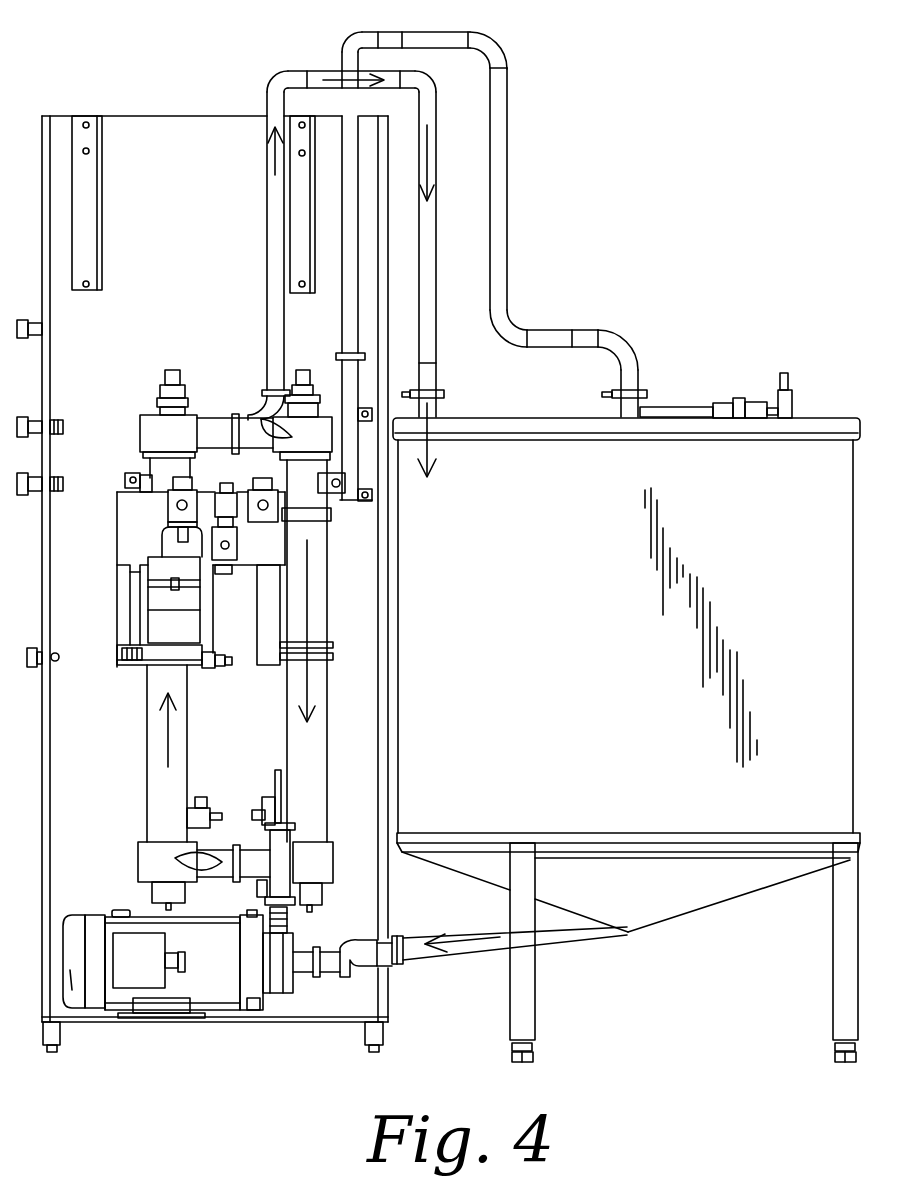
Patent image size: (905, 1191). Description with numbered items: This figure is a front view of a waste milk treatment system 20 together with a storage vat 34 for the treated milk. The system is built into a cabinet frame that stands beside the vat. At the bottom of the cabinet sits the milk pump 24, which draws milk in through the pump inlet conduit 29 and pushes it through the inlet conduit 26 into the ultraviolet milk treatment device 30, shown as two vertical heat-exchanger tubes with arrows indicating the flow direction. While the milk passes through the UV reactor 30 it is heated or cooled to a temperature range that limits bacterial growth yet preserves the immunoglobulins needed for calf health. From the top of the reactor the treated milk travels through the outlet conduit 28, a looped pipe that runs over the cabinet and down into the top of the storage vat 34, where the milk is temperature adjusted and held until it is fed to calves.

The waste milk treatment system 20 is at (579, 240).
The milk pump 24 is at (217, 977).
The inlet conduit 26 is at (219, 860).
The outlet conduit 28 is at (279, 79).
The pump inlet conduit 29 is at (475, 953).
The ultraviolet milk treatment device 30 is at (160, 785).
The storage vat 34 is at (608, 648).